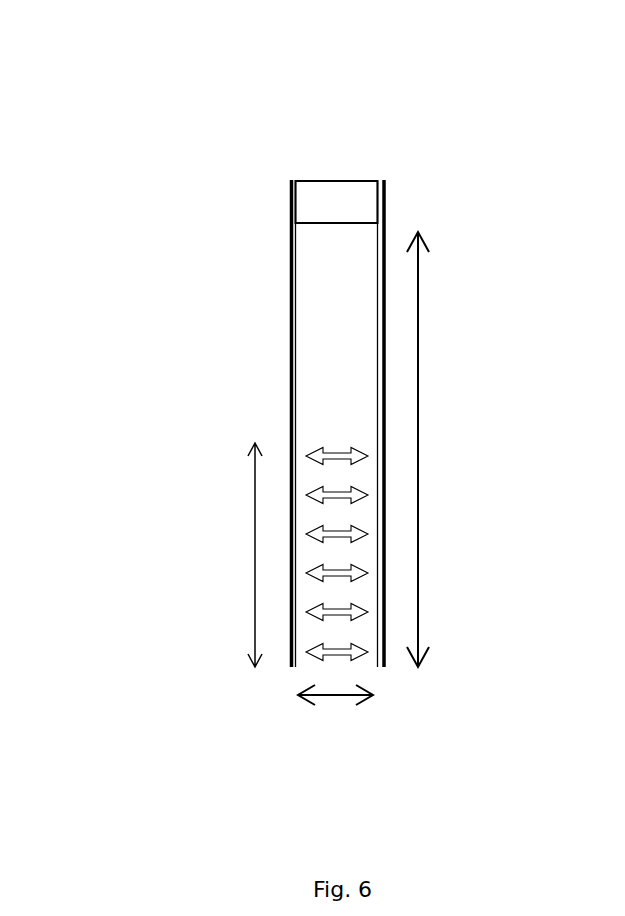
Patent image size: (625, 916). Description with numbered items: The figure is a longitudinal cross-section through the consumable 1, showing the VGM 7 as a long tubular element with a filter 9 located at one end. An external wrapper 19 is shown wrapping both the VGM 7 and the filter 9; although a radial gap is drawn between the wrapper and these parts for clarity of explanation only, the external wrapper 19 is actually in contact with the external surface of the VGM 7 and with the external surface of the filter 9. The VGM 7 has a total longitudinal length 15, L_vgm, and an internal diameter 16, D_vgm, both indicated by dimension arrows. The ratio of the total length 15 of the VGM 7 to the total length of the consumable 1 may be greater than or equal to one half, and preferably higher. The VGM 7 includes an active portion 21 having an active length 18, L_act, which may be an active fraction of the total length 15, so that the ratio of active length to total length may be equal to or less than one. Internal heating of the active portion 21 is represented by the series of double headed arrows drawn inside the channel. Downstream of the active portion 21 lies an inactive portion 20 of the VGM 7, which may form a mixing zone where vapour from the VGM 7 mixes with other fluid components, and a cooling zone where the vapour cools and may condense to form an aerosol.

The consumable 1 is at (440, 150).
The VGM 7 is at (292, 313).
The filter 9 is at (357, 197).
The total longitudinal length 15 is at (418, 346).
The internal diameter 16 is at (335, 696).
The active length 18 is at (252, 547).
The external wrapper 19 is at (293, 340).
The inactive portion 20 is at (318, 382).
The active portion 21 is at (315, 438).